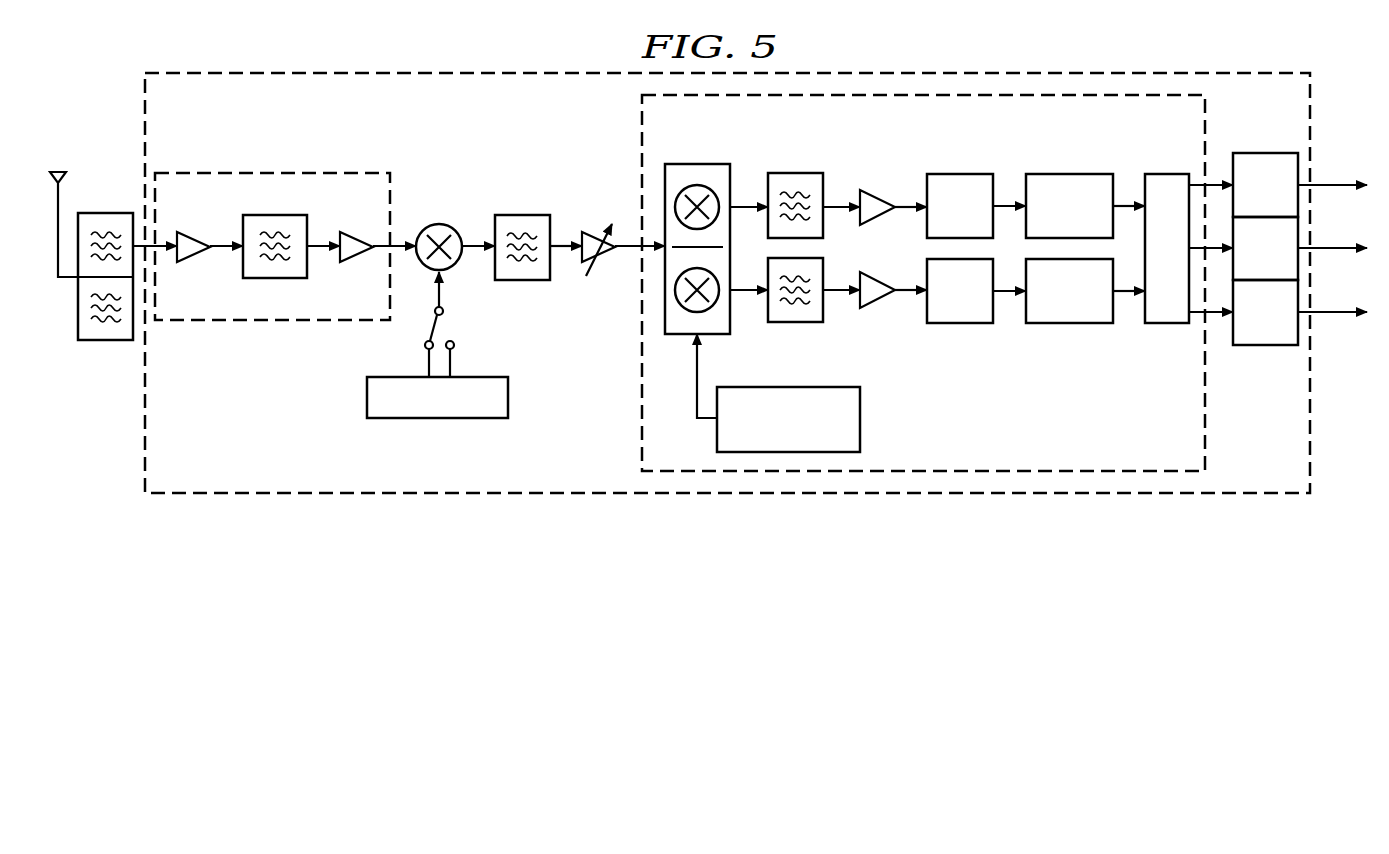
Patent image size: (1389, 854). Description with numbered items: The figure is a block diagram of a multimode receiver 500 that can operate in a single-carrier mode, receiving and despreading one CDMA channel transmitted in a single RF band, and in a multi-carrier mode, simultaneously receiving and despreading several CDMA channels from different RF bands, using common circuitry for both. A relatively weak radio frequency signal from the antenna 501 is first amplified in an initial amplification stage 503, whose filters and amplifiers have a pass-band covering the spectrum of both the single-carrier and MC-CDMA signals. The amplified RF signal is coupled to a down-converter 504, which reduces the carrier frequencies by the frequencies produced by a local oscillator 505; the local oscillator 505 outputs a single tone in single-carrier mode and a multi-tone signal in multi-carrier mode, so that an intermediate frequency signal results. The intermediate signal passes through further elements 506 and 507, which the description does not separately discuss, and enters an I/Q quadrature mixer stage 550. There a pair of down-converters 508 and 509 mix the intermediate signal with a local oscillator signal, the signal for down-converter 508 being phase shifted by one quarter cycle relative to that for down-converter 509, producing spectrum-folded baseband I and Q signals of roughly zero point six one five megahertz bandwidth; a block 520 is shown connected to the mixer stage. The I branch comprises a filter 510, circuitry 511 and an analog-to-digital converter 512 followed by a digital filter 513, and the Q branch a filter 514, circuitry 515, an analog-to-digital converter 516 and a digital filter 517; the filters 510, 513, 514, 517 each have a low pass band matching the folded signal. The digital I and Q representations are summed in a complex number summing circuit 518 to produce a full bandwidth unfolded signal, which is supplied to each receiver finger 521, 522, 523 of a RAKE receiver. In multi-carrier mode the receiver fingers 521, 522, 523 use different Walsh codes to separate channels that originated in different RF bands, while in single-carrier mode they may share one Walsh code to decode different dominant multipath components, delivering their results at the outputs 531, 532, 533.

The multimode receiver 500 is at (145, 130).
The antenna 501 is at (62, 178).
The initial amplification stage 503 is at (265, 172).
The down-converter 504 is at (437, 224).
The local oscillator 505 is at (367, 395).
The IF filter 506 is at (522, 215).
The variable gain amplifier 507 is at (601, 266).
The down-converter 508 is at (697, 164).
The down-converter 509 is at (682, 335).
The filter 510 is at (795, 173).
The circuitry 511 is at (882, 192).
The analog-to-digital converter 512 is at (960, 173).
The digital filter 513 is at (1068, 173).
The filter 514 is at (793, 323).
The circuitry 515 is at (882, 308).
The analog-to-digital converter 516 is at (960, 324).
The digital filter 517 is at (1068, 324).
The complex number summing circuit 518 is at (1165, 173).
The oscillator 520 is at (860, 418).
The receiver finger 521 is at (1285, 201).
The receiver finger 522 is at (1285, 263).
The receiver finger 523 is at (1285, 325).
The first output 531 is at (1345, 184).
The second output 532 is at (1342, 247).
The third output 533 is at (1343, 321).
The I/Q quadrature mixer stage 550 is at (640, 402).